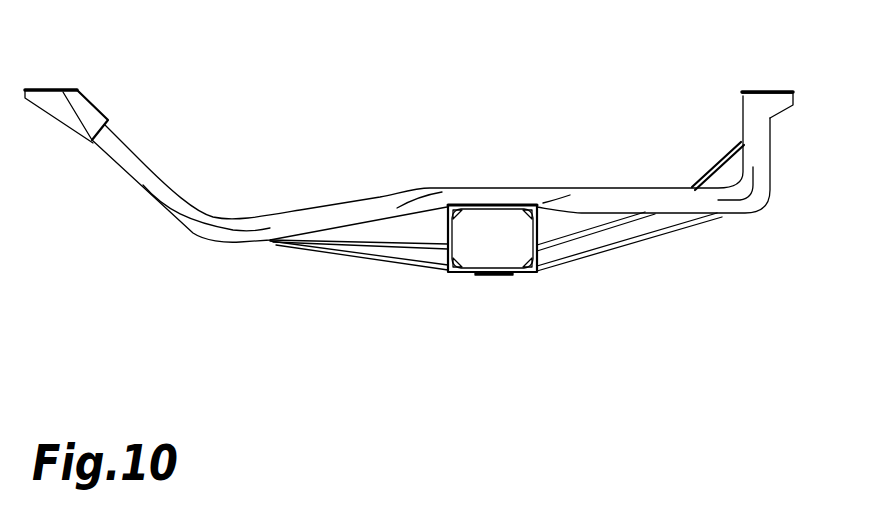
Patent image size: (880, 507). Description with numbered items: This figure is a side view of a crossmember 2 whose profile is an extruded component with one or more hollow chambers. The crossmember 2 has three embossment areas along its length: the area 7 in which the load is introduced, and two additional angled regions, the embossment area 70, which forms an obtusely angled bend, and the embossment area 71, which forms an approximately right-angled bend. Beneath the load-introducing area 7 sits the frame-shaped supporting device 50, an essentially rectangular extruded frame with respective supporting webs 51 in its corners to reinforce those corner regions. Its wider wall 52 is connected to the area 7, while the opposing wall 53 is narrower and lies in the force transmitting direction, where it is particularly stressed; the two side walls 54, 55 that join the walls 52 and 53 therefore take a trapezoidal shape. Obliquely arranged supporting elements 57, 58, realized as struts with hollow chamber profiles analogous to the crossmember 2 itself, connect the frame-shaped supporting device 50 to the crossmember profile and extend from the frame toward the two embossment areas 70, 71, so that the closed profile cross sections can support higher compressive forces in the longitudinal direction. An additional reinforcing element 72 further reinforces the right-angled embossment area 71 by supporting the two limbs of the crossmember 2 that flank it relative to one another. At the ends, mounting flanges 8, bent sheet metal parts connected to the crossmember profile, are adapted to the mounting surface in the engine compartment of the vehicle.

The crossmember 2 is at (267, 217).
The mounting flange 8 is at (40, 104).
The supporting web 51 is at (440, 214).
The area for introducing a load 7 is at (377, 103).
The frame-shaped supporting device 50 is at (467, 268).
The wider wall 52 is at (493, 205).
The opposing wall 53 is at (497, 273).
The side wall 54 is at (443, 255).
The side wall 55 is at (520, 243).
The supporting element 57 is at (367, 257).
The supporting element 58 is at (663, 230).
The embossment area 70 is at (118, 225).
The embossment area 71 is at (724, 249).
The reinforcing element 72 is at (715, 180).